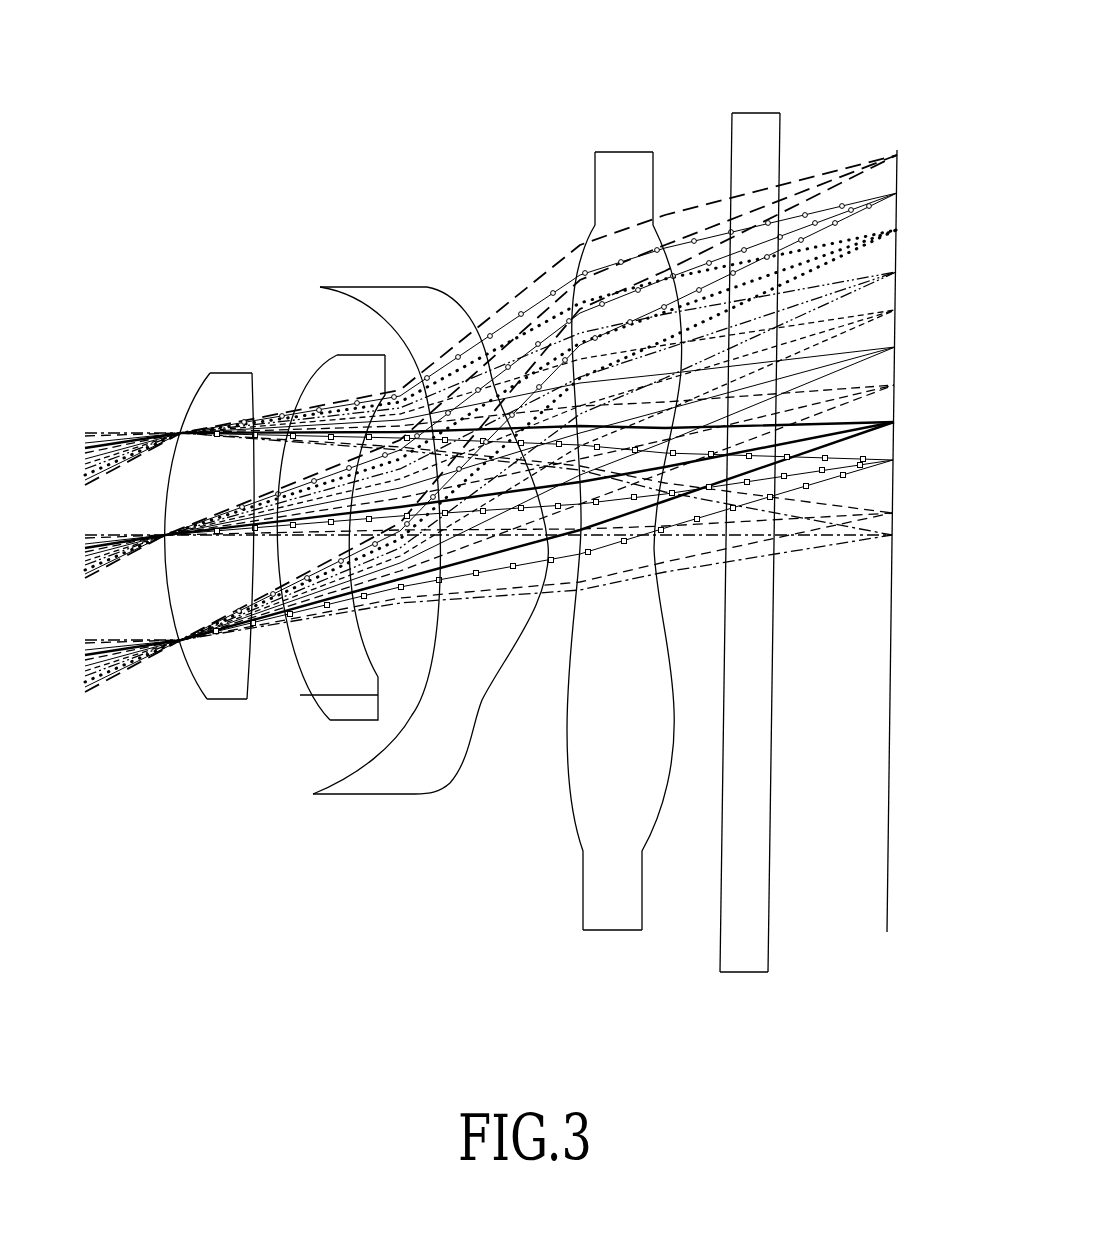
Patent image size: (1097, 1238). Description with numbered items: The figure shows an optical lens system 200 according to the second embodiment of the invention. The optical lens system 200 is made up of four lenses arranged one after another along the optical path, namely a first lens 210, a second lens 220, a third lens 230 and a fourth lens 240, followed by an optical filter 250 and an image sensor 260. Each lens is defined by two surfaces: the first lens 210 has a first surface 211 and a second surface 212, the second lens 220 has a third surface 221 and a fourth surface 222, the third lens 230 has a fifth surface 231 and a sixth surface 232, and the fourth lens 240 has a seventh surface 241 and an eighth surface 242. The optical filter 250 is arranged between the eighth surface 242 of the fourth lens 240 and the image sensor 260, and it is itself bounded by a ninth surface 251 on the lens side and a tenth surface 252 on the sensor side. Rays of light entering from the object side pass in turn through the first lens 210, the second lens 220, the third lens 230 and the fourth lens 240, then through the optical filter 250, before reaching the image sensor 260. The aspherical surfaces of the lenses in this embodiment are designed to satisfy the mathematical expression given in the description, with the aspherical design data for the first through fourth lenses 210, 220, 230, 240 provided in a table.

The optical lens system 200 is at (468, 99).
The first lens 210 is at (179, 528).
The first surface 211 is at (200, 396).
The second surface 212 is at (255, 388).
The second lens 220 is at (272, 522).
The third surface 221 is at (320, 363).
The fourth surface 222 is at (303, 697).
The third lens 230 is at (417, 539).
The fifth surface 231 is at (313, 793).
The sixth surface 232 is at (440, 790).
The fourth lens 240 is at (575, 465).
The seventh surface 241 is at (595, 183).
The eighth surface 242 is at (654, 166).
The optical filter 250 is at (754, 521).
The ninth surface 251 is at (720, 943).
The tenth surface 252 is at (768, 940).
The image sensor 260 is at (888, 902).